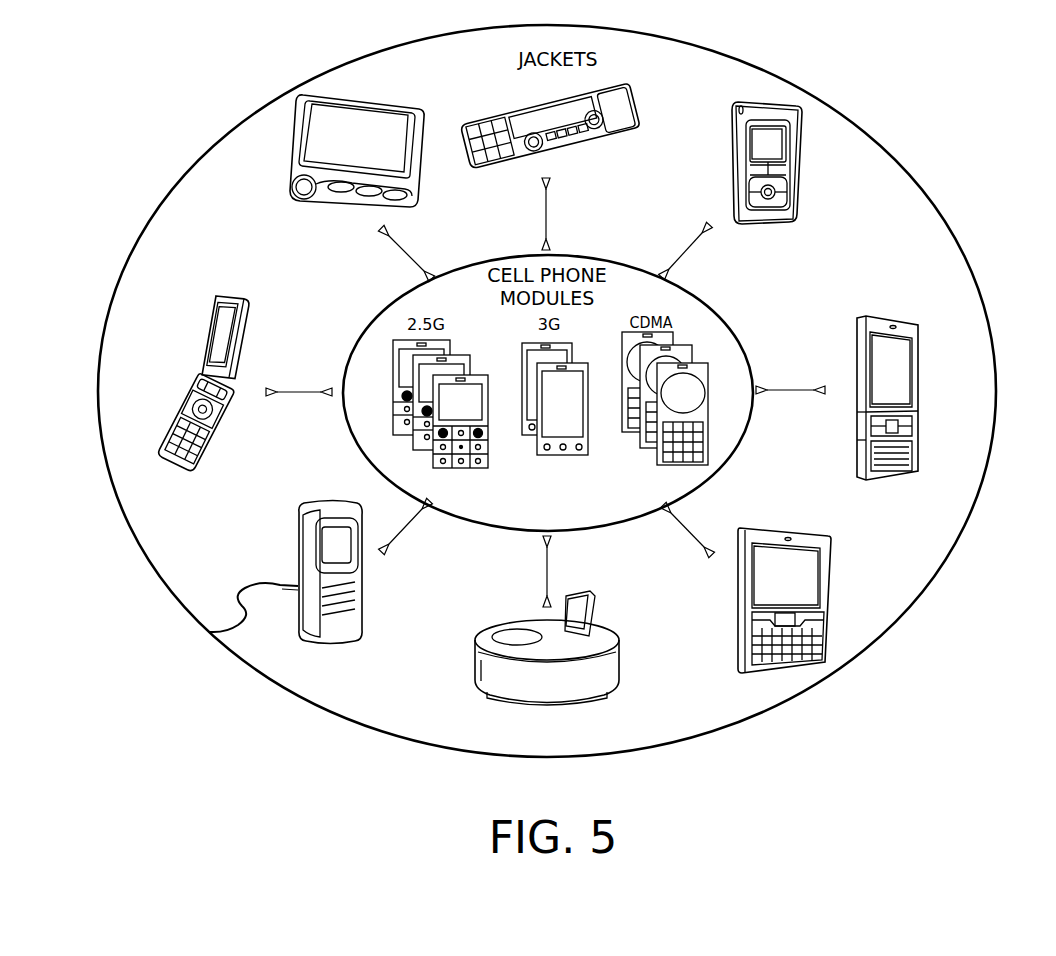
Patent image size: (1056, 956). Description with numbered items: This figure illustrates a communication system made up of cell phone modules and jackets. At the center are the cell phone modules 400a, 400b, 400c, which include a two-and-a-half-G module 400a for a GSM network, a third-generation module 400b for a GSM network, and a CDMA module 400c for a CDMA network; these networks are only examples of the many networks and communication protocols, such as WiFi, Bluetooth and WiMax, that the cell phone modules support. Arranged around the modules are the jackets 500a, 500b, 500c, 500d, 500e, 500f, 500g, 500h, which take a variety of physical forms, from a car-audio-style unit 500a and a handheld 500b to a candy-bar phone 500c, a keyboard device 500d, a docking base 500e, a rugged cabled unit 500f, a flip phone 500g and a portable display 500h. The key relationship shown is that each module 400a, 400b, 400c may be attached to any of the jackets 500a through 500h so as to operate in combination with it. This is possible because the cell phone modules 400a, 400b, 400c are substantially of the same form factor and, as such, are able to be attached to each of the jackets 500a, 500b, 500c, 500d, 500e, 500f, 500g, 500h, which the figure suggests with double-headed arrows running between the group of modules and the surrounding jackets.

The jacket 500a is at (612, 132).
The jacket 500b is at (802, 195).
The jacket 500c is at (923, 381).
The jacket 500d is at (835, 562).
The jacket 500e is at (600, 610).
The jacket 500f is at (367, 578).
The jacket 500g is at (252, 333).
The jacket 500h is at (422, 198).
The cell phone module 400a is at (478, 470).
The cell phone module 400b is at (553, 460).
The cell phone module 400c is at (637, 450).